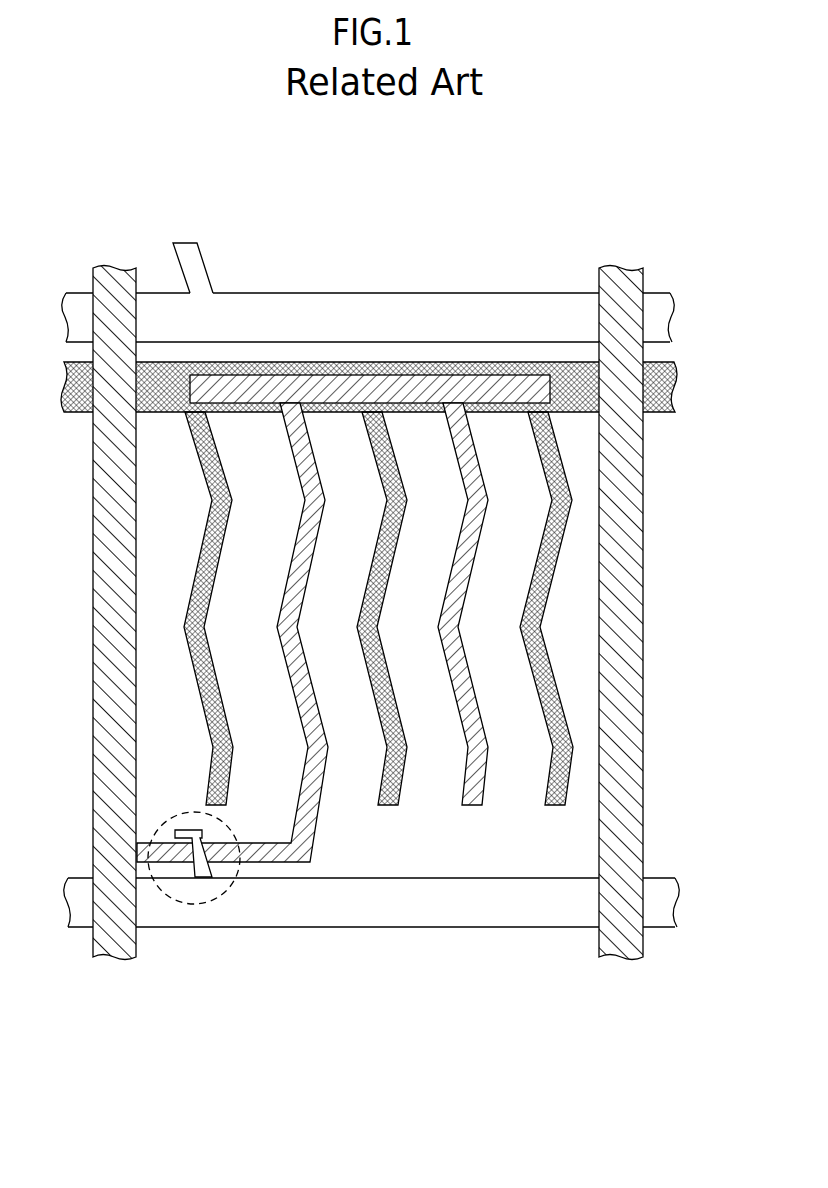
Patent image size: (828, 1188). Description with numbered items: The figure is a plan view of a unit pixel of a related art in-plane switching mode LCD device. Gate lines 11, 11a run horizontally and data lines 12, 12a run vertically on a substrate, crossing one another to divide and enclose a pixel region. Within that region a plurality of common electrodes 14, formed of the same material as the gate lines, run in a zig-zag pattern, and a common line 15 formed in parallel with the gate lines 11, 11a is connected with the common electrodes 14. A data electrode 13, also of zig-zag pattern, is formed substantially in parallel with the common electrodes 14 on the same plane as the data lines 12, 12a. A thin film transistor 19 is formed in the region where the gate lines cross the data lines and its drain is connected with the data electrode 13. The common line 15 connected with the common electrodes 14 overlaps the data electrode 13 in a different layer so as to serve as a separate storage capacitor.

The gate line 11 is at (667, 903).
The gate line 11a is at (670, 322).
The data line 12 is at (117, 957).
The data line 12a is at (620, 960).
The data electrode 13 is at (447, 612).
The common electrodes 14 is at (392, 543).
The common line 15 is at (672, 386).
The thin film transistor 19 is at (213, 903).